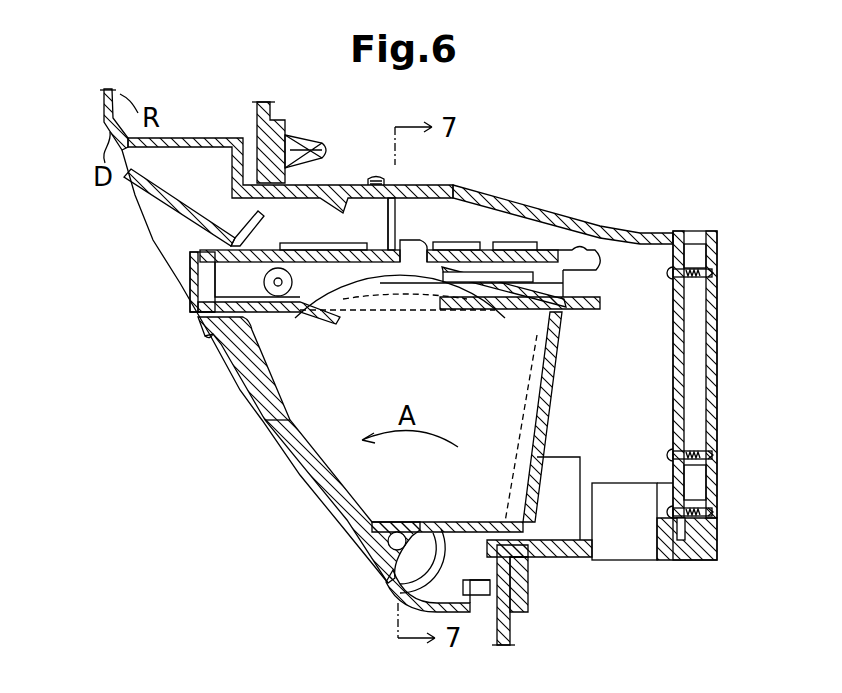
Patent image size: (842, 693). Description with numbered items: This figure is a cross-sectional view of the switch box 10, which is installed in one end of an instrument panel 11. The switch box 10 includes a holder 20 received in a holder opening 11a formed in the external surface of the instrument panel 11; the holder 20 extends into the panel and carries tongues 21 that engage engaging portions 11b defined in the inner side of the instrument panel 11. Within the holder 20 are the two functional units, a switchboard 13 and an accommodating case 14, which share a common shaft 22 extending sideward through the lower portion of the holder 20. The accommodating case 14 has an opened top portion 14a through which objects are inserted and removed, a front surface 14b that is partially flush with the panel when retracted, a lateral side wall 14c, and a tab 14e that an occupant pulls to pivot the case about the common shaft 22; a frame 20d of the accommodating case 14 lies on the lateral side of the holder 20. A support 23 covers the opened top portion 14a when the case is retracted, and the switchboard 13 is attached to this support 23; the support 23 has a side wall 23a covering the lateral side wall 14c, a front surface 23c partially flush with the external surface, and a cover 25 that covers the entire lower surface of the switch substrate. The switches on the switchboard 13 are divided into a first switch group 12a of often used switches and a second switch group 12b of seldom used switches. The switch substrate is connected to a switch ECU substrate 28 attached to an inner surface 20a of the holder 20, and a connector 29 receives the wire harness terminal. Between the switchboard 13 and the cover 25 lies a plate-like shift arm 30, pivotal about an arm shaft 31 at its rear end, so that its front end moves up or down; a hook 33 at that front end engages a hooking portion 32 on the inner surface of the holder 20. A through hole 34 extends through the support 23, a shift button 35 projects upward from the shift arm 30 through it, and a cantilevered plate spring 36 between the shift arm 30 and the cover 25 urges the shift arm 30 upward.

The switch box 10 is at (179, 529).
The instrument panel 11 is at (103, 108).
The holder opening 11a is at (150, 147).
The engaging portions 11b is at (257, 110).
The first switch group 12a is at (353, 243).
The second switch group 12b is at (515, 243).
The switchboard 13 is at (547, 243).
The accommodating case 14 is at (322, 487).
The opened top portion 14a is at (548, 328).
The front surface 14b is at (355, 533).
The lateral side wall 14c is at (310, 432).
The tab 14e is at (222, 343).
The holder 20 is at (628, 228).
The inner surface 20a is at (705, 338).
The frame 20d is at (143, 212).
The tongues 21 is at (320, 146).
The common shaft 22 is at (397, 538).
The support 23 is at (190, 280).
The side wall 23a is at (562, 314).
The front surface 23c is at (190, 290).
The cover 25 is at (403, 312).
The switch ECU substrate 28 is at (673, 398).
The connector 29 is at (640, 562).
The shift arm 30 is at (345, 286).
The arm shaft 31 is at (278, 302).
The hooking portion 32 is at (368, 190).
The hook 33 is at (583, 266).
The through hole 34 is at (427, 247).
The shift button 35 is at (413, 243).
The cantilevered plate spring 36 is at (466, 302).